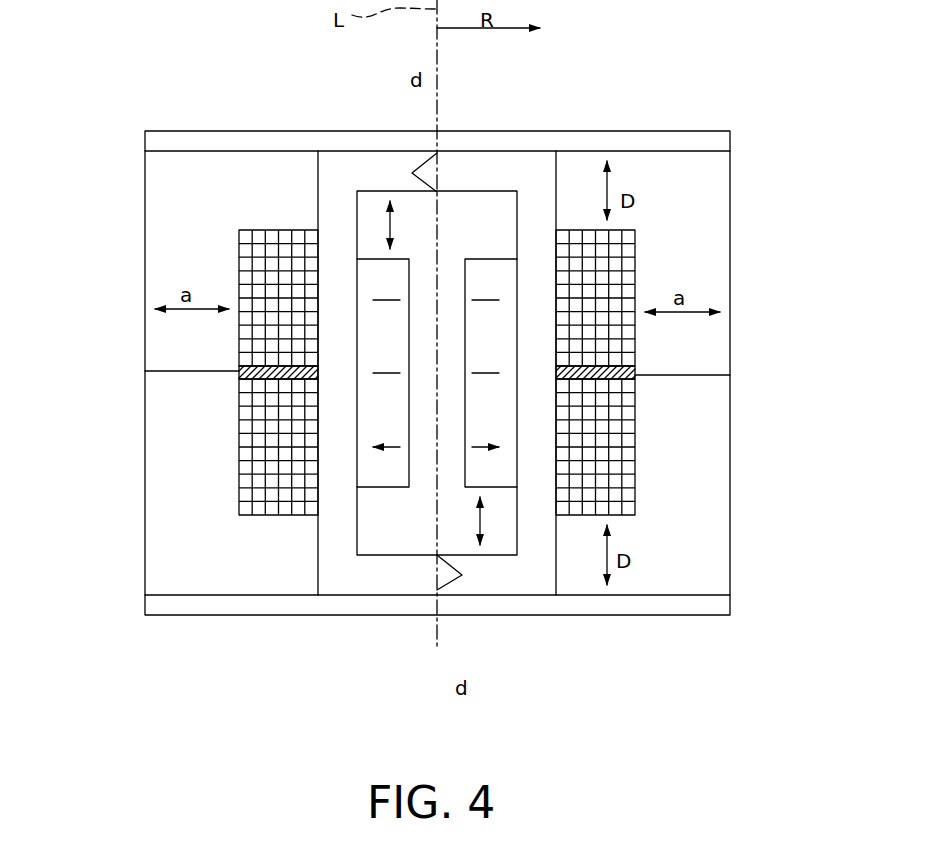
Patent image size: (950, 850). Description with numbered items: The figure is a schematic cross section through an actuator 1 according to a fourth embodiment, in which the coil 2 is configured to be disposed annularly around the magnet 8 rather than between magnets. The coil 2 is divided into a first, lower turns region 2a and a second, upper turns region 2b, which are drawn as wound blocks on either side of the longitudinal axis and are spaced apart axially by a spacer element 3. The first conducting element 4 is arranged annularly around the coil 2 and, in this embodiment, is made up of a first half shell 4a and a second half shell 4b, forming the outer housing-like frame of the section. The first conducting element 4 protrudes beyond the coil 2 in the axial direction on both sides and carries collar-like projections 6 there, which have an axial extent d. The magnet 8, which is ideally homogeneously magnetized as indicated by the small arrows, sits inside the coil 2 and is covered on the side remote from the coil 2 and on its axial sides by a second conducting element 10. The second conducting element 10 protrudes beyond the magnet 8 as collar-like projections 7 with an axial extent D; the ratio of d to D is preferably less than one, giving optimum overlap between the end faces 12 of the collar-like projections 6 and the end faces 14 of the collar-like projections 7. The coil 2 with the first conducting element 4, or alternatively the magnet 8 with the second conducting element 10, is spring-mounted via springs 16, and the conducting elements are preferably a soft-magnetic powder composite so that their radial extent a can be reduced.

The actuator 1 is at (740, 96).
The coil 2 is at (263, 345).
The first, lower turns region 2a is at (608, 410).
The second, upper turns region 2b is at (618, 283).
The spacer element 3 is at (262, 377).
The first conducting element 4 is at (741, 566).
The first half shell 4a is at (150, 186).
The second half shell 4b is at (150, 524).
The collar-like projections 6 is at (372, 195).
The collar-like projections 7 is at (222, 160).
The magnet 8 is at (366, 275).
The second conducting element 10 is at (420, 330).
The end faces 12 is at (340, 195).
The end faces 14 is at (318, 172).
The springs 16 is at (437, 155).